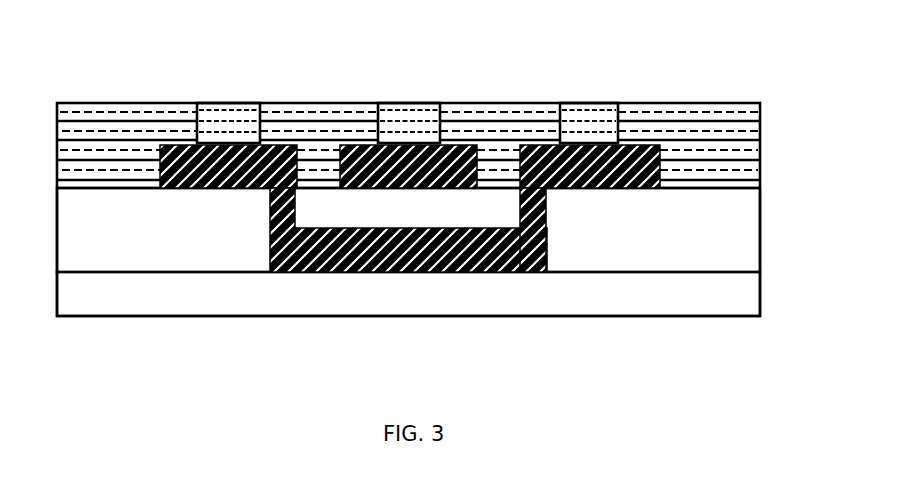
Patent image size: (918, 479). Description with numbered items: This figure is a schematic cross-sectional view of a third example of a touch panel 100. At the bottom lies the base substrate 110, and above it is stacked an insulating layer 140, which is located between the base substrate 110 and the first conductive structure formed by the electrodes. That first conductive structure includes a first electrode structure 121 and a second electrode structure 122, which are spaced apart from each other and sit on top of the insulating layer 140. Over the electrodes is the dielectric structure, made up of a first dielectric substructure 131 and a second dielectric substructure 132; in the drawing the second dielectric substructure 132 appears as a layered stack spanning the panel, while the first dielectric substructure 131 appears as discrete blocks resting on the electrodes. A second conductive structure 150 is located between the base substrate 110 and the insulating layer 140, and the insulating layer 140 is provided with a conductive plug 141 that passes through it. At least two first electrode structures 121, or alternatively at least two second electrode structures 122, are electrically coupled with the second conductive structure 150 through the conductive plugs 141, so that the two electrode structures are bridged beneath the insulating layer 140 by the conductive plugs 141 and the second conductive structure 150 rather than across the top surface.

The touch panel 100 is at (47, 32).
The base substrate 110 is at (745, 297).
The first electrode structure 121 is at (213, 189).
The second electrode structure 122 is at (455, 189).
The first dielectric substructure 131 is at (588, 104).
The second dielectric substructure 132 is at (745, 148).
The insulating layer 140 is at (745, 231).
The conductive plug 141 is at (546, 205).
The second conductive structure 150 is at (345, 272).